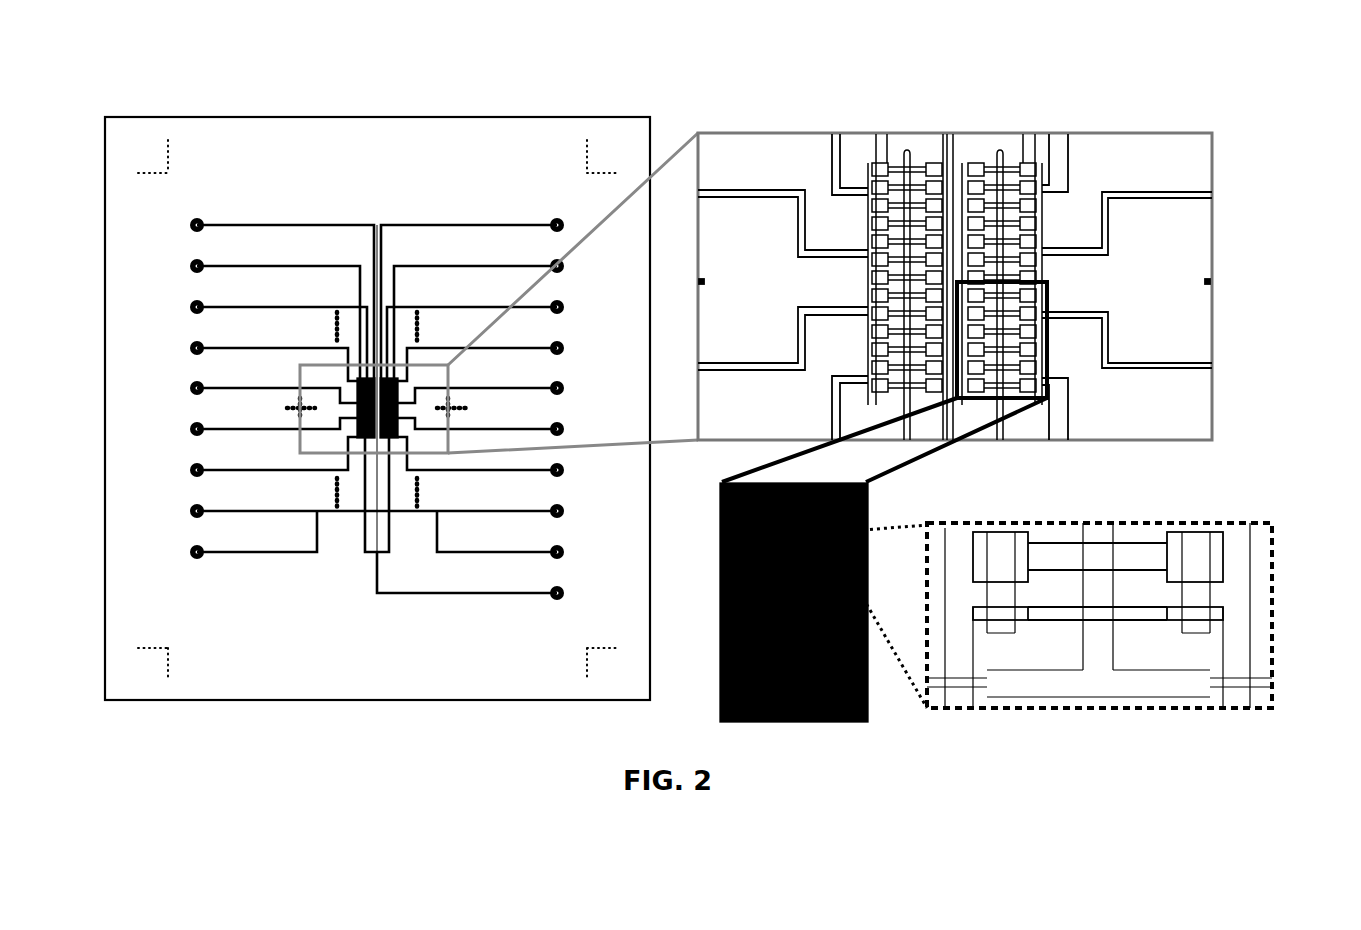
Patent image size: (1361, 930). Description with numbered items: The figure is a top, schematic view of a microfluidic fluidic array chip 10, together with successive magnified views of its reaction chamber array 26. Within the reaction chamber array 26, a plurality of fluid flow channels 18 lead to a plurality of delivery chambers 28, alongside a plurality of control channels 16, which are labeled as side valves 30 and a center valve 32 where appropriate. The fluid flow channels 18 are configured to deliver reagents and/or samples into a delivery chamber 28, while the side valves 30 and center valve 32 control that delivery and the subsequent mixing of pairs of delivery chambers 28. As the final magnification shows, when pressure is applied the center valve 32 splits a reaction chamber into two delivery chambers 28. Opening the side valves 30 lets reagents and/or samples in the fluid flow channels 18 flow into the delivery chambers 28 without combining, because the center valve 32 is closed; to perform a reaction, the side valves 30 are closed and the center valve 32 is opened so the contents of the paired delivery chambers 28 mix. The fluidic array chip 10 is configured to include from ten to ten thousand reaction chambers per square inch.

The fluidic array chip 10 is at (482, 108).
The control channels 16 is at (234, 266).
The fluid flow channels 18 is at (831, 163).
The reaction chamber array 26 is at (1213, 245).
The delivery chambers 28 is at (720, 603).
The side valves 30 is at (874, 150).
The center valve 32 is at (908, 150).